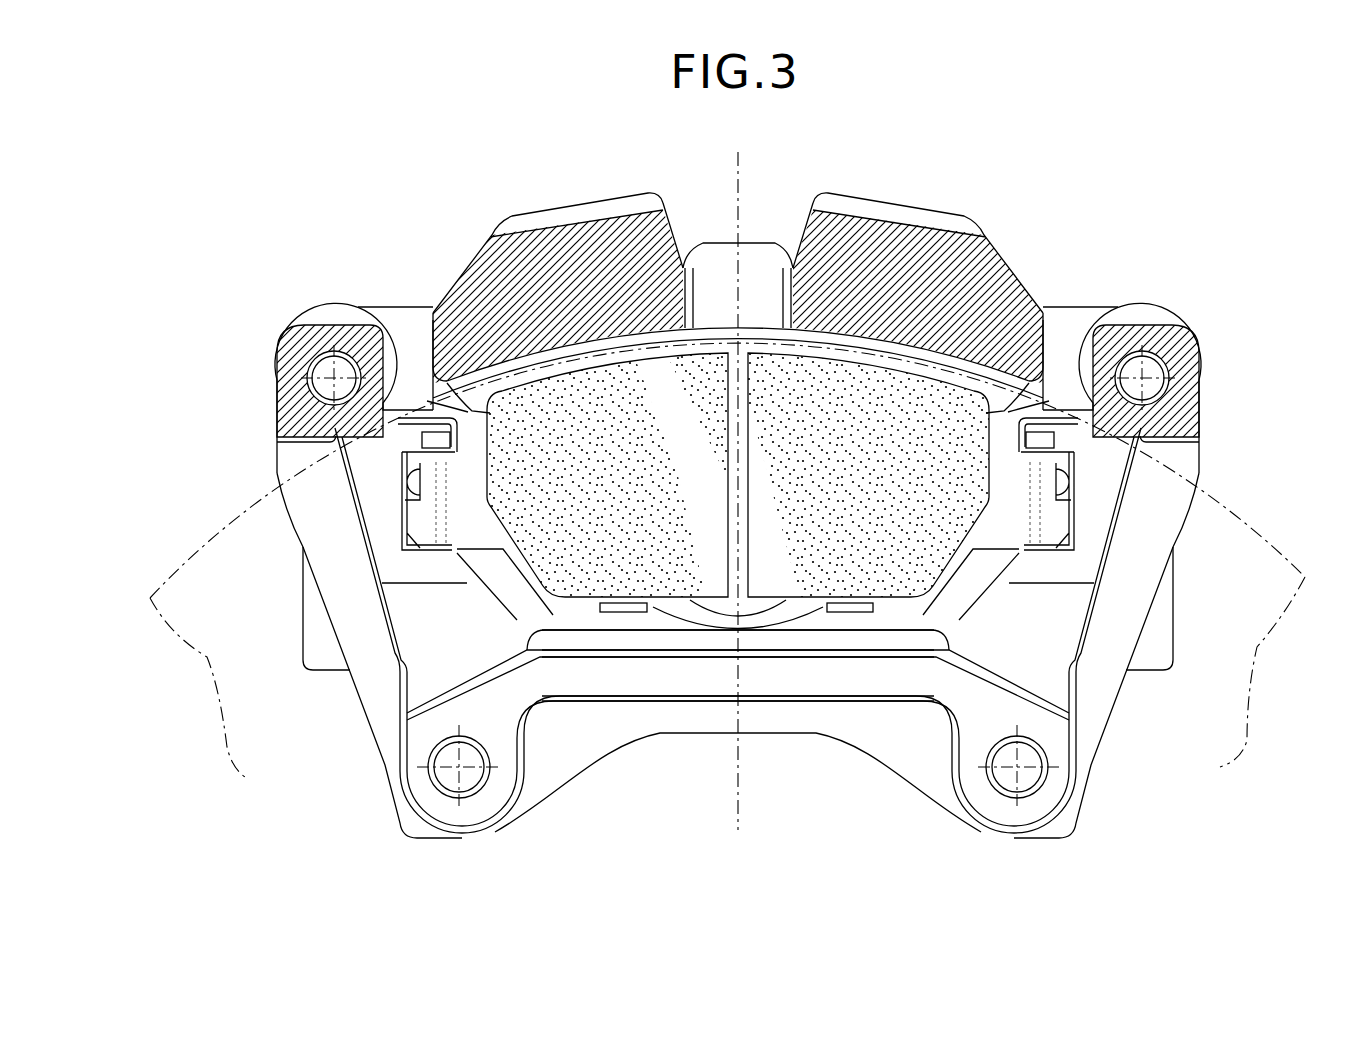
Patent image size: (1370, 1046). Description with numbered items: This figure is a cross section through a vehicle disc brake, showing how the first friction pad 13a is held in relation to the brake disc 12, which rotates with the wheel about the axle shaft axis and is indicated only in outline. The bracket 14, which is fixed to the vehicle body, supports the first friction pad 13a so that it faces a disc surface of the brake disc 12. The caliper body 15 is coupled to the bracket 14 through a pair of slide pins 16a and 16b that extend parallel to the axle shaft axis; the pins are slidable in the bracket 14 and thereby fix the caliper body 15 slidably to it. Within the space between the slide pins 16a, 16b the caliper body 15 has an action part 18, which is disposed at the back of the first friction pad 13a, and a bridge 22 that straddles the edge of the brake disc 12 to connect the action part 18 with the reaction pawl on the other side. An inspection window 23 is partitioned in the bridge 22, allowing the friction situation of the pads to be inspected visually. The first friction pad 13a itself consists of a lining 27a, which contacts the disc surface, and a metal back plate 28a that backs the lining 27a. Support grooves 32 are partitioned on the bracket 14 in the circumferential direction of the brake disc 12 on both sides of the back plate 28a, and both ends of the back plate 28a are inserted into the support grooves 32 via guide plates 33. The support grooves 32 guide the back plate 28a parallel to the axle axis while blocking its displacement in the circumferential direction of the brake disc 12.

The brake disc 12 is at (1262, 528).
The first friction pad 13a is at (738, 598).
The bracket 14 is at (377, 727).
The caliper body 15 is at (746, 500).
The slide pin 16a is at (1160, 364).
The slide pin 16b is at (310, 350).
The action part 18 is at (791, 630).
The bridge 22 is at (592, 217).
The inspection window 23 is at (788, 286).
The lining 27a is at (580, 583).
The metal back plate 28a is at (523, 580).
The support groove 32 is at (403, 492).
The guide plate 33 is at (420, 415).